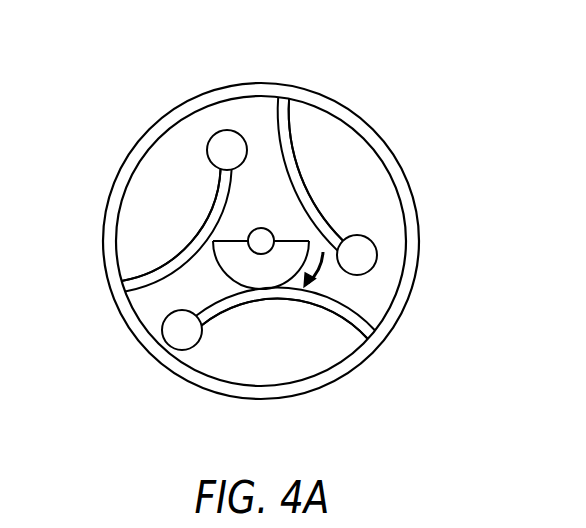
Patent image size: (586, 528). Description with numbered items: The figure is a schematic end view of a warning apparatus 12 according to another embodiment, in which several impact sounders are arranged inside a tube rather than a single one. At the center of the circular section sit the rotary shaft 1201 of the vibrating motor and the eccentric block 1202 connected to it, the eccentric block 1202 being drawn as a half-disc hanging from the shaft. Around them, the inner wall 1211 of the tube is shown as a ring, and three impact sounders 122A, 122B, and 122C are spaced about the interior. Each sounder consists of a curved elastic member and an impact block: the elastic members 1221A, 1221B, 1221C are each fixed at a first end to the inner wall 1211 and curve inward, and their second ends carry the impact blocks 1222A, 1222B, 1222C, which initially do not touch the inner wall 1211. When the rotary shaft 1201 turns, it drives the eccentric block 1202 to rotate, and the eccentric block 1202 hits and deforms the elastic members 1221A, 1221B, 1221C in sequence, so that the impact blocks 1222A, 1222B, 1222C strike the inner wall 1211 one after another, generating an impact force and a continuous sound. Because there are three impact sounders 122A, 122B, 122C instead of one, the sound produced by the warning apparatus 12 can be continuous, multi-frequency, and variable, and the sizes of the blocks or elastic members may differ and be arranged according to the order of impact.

The warning apparatus 12 is at (429, 82).
The inner wall 1211 is at (343, 127).
The rotary shaft 1201 is at (262, 227).
The eccentric block 1202 is at (237, 265).
The elastic member 1221A is at (263, 300).
The elastic member 1221B is at (207, 208).
The elastic member 1221C is at (300, 187).
The impact block 1222A is at (173, 338).
The impact block 1222B is at (223, 147).
The impact block 1222C is at (363, 255).
The impact sounder 122A is at (337, 318).
The impact sounder 122B is at (167, 265).
The impact sounder 122C is at (340, 223).